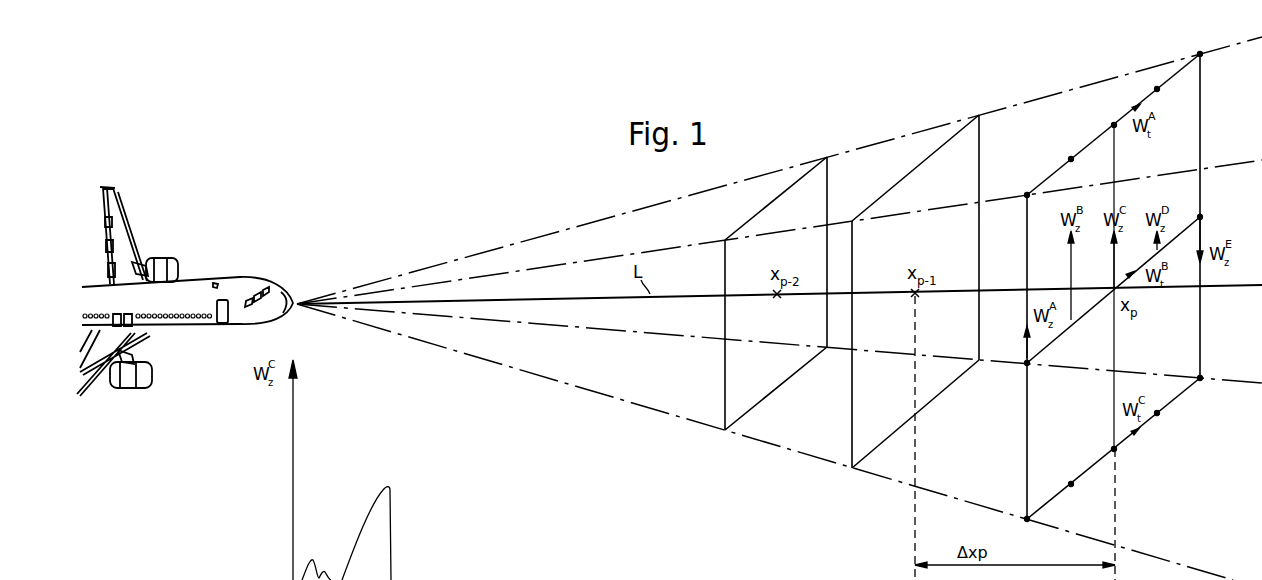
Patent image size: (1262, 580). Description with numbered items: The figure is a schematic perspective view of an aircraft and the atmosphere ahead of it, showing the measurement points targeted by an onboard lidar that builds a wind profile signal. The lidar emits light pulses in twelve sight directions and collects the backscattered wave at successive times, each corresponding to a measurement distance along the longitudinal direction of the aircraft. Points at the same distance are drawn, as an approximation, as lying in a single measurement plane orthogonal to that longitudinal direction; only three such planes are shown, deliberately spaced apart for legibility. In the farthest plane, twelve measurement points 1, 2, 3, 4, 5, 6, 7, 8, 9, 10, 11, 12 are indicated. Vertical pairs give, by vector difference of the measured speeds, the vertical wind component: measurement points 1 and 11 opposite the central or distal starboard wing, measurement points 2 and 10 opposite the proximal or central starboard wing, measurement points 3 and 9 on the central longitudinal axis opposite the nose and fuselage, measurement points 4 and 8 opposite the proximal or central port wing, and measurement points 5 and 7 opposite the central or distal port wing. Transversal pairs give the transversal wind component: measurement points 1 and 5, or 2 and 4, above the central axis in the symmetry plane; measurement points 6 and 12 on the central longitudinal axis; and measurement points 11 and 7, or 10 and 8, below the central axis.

The measurement point 1 is at (1024, 186).
The measurement point 2 is at (1068, 150).
The measurement point 3 is at (1111, 115).
The measurement point 4 is at (1154, 80).
The measurement point 5 is at (1199, 44).
The measurement point 6 is at (1192, 210).
The measurement point 7 is at (1200, 391).
The measurement point 8 is at (1158, 426).
The measurement point 9 is at (1120, 460).
The measurement point 10 is at (1073, 498).
The measurement point 11 is at (1016, 529).
The measurement point 12 is at (1015, 365).